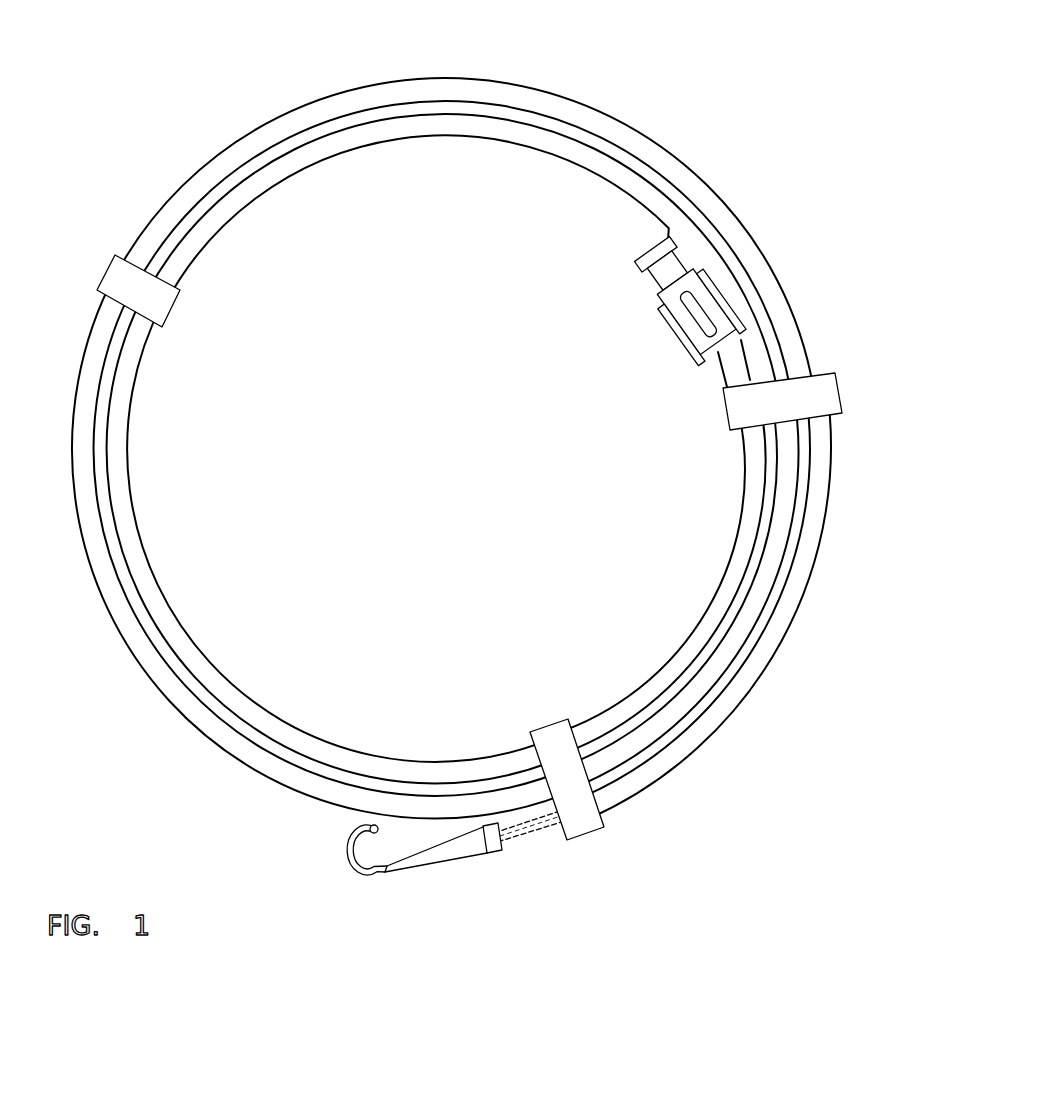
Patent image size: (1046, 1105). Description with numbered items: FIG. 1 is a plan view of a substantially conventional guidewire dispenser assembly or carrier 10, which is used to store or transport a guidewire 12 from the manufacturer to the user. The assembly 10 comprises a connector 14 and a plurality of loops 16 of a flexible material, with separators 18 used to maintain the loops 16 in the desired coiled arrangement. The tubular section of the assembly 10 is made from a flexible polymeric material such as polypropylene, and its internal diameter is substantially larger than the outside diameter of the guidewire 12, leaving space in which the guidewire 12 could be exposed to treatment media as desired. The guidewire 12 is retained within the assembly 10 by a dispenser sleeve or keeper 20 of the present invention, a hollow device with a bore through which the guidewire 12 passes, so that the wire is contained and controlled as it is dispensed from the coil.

The guidewire dispenser assembly 10 is at (494, 480).
The guidewire 12 is at (363, 876).
The connector 14 is at (660, 268).
The loops 16 is at (765, 262).
The separators 18 is at (815, 393).
The dispenser sleeve 20 is at (495, 850).